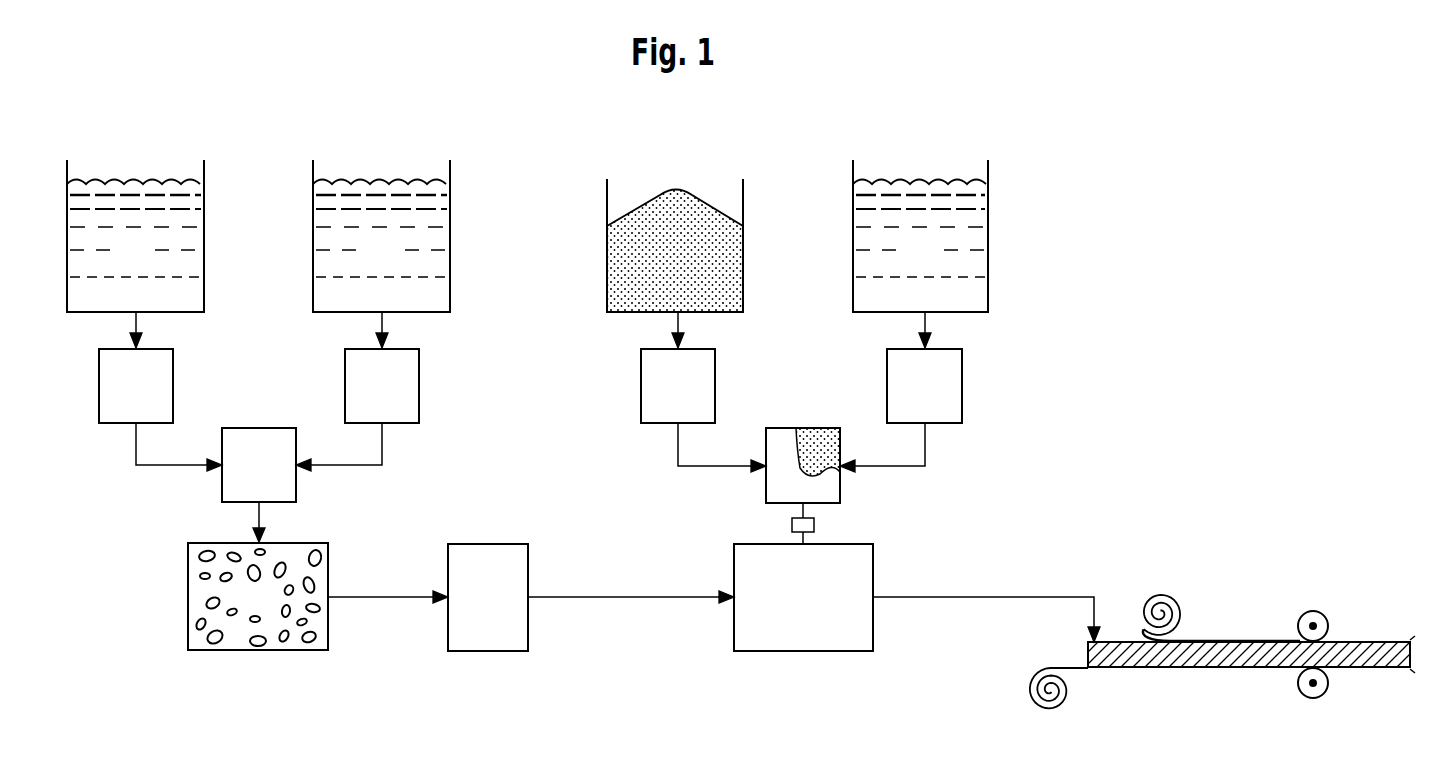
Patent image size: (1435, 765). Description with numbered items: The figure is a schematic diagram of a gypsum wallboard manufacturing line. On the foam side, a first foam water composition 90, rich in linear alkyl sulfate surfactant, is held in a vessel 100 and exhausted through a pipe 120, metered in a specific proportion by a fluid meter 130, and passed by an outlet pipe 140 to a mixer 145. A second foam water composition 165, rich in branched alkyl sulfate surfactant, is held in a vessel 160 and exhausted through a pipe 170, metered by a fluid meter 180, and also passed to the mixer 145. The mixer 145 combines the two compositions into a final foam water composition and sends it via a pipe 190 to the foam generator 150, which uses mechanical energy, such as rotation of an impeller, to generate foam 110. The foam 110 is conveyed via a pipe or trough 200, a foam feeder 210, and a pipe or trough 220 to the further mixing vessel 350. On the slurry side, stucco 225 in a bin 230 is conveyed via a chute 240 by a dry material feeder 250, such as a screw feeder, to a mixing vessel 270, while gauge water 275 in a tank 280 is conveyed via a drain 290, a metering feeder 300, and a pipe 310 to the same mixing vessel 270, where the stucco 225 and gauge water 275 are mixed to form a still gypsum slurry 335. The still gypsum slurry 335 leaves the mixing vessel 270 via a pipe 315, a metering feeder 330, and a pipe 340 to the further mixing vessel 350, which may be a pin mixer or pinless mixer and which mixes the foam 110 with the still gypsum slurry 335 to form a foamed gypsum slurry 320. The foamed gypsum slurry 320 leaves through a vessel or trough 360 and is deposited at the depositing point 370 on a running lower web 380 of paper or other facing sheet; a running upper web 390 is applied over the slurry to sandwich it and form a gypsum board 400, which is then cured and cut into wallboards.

The first foam water composition 90 is at (148, 263).
The vessel 100 is at (204, 184).
The foam 110 is at (240, 610).
The pipe 120 is at (136, 322).
The fluid meter 130 is at (119, 398).
The outlet pipe 140 is at (133, 440).
The mixer 145 is at (256, 428).
The foam generator 150 is at (255, 652).
The vessel 160 is at (450, 184).
The second foam water composition 165 is at (364, 263).
The pipe 170 is at (382, 322).
The fluid meter 180 is at (365, 398).
The pipe 190 is at (259, 512).
The pipe or trough 200 is at (383, 595).
The foam feeder 210 is at (490, 544).
The pipe or trough 220 is at (618, 595).
The stucco 225 is at (659, 263).
The bin 230 is at (743, 184).
The chute 240 is at (678, 322).
The dry material feeder 250 is at (661, 398).
The mixing vessel 270 is at (794, 428).
The gauge water 275 is at (903, 263).
The tank 280 is at (988, 184).
The drain 290 is at (925, 322).
The metering feeder 300 is at (908, 398).
The pipe 310 is at (925, 440).
The pipe 315 is at (805, 512).
The foamed gypsum slurry 320 is at (1143, 655).
The metering feeder 330 is at (814, 525).
The still gypsum slurry 335 is at (830, 428).
The pipe 340 is at (806, 537).
The mixing vessel 350 is at (800, 652).
The vessel or trough 360 is at (986, 595).
The depositing point 370 is at (1102, 605).
The running lower web 380 is at (1188, 668).
The running upper web 390 is at (1192, 640).
The gypsum board 400 is at (1388, 642).